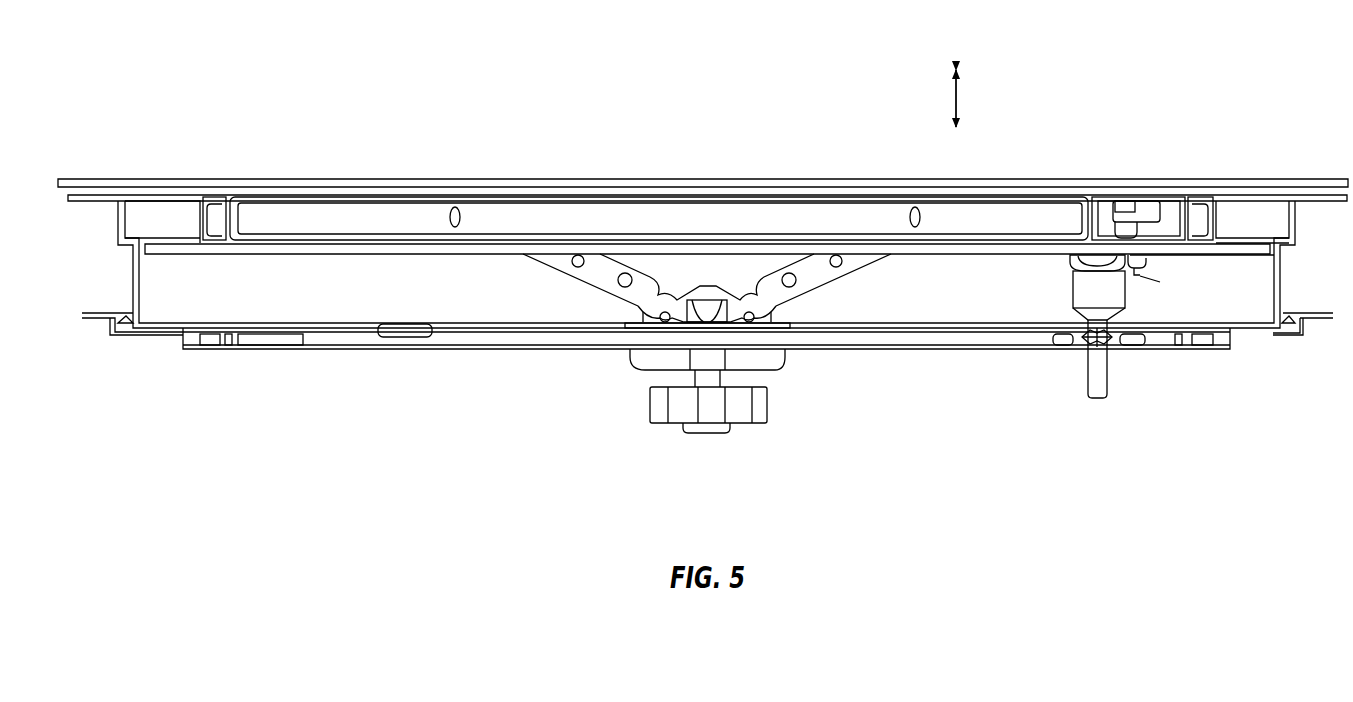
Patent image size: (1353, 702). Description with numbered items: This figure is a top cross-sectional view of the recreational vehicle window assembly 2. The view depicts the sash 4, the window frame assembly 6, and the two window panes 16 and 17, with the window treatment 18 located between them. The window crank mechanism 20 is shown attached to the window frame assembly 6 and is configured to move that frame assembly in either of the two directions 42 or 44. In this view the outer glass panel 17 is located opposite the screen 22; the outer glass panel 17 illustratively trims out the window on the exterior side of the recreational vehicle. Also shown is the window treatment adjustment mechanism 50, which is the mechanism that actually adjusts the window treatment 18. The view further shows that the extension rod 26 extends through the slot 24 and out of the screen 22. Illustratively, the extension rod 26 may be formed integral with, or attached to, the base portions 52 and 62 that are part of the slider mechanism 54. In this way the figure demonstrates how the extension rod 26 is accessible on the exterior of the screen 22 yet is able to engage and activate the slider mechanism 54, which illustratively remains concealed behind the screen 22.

The recreational vehicle window assembly 2 is at (778, 115).
The sash 4 is at (132, 281).
The window frame assembly 6 is at (173, 188).
The window pane 16 is at (325, 258).
The outer glass panel 17 is at (118, 184).
The window treatment 18 is at (832, 215).
The window crank mechanism 20 is at (762, 430).
The screen 22 is at (248, 352).
The slot 24 is at (1093, 338).
The extension rod 26 is at (1107, 380).
The direction 42 is at (955, 77).
The direction 44 is at (955, 120).
The window treatment adjustment mechanism 50 is at (1145, 202).
The base portion 52 is at (1072, 288).
The slider mechanism 54 is at (1157, 282).
The base portion 62 is at (1070, 258).